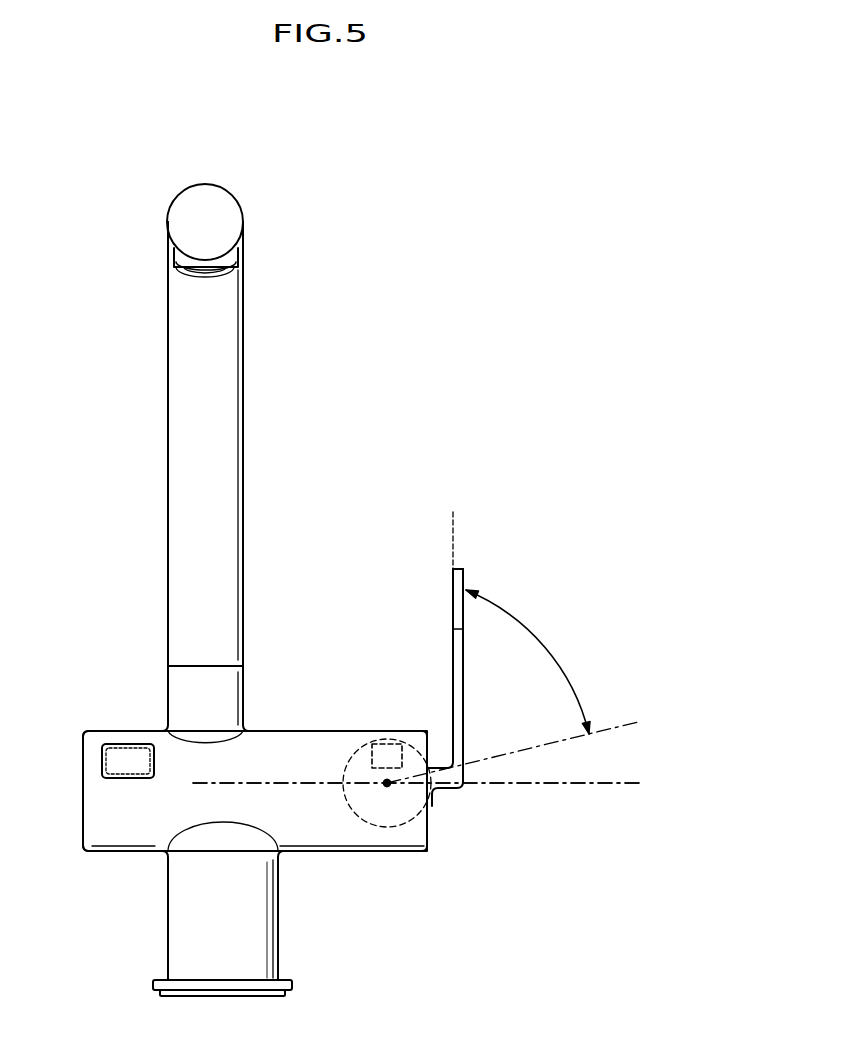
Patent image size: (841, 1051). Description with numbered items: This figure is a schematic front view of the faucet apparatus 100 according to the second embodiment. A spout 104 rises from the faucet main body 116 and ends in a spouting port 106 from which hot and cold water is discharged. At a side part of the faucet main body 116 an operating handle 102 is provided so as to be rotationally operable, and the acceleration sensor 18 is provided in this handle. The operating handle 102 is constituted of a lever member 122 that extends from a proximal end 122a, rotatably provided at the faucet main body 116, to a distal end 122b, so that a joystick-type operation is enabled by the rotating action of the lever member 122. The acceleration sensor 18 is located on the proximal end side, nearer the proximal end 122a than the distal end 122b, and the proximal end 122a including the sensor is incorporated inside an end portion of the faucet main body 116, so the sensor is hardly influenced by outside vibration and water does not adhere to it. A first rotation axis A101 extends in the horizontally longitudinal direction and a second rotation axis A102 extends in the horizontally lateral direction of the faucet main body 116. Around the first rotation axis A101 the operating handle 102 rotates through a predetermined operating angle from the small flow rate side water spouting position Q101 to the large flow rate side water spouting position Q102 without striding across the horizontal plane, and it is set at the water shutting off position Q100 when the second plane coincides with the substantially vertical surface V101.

The faucet apparatus 100 is at (326, 200).
The spout 104 is at (167, 427).
The spouting port 106 is at (193, 277).
The faucet main body 116 is at (290, 731).
The acceleration sensor 18 is at (399, 885).
The operating handle 102 is at (452, 625).
The lever member 122 is at (452, 678).
The proximal end 122a is at (392, 828).
The distal end 122b is at (455, 583).
The vertical surface V101 is at (451, 518).
The water shutting off position Q100 is at (463, 566).
The small flow rate side water spouting position Q101 is at (554, 647).
The large flow rate side water spouting position Q102 is at (562, 752).
The first rotation axis A101 is at (387, 783).
The second rotation axis A102 is at (577, 785).